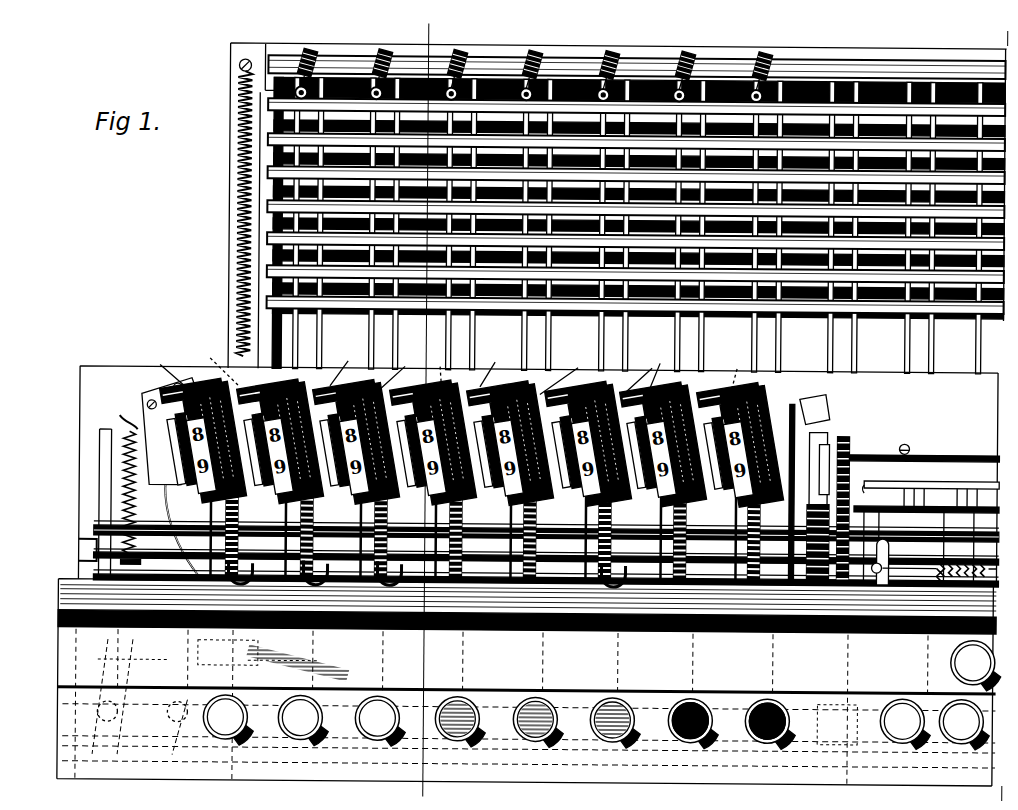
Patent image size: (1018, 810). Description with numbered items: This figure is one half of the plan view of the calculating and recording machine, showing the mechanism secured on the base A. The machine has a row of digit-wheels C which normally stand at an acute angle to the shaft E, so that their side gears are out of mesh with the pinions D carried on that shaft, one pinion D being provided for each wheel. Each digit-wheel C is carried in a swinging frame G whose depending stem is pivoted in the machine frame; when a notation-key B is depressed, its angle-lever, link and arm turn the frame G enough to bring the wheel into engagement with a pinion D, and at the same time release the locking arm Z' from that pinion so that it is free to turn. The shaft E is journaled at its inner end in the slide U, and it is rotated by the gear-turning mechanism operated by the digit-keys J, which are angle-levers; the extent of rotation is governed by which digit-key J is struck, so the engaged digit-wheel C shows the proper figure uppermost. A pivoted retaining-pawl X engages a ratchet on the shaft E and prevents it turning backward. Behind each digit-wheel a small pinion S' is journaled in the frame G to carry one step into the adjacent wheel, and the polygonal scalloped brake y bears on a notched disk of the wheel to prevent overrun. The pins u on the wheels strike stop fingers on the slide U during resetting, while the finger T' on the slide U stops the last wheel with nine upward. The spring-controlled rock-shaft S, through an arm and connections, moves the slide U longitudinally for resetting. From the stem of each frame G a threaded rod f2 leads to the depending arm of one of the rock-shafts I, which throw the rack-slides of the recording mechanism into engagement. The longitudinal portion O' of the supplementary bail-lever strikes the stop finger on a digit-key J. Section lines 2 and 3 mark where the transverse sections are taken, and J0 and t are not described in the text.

The rock-shafts I is at (790, 350).
The threaded rod f2 is at (534, 54).
The section line 2 2 is at (422, 403).
The section line 3 3 is at (1004, 411).
The finger T' is at (133, 497).
The screw t is at (152, 467).
The slide U is at (66, 549).
The pins u is at (438, 513).
The rock-shaft S is at (480, 435).
The shaft E is at (546, 545).
The pinions D is at (473, 549).
The swinging frame G is at (492, 539).
The digit-wheels C is at (448, 442).
The small pinion S' is at (401, 368).
The longitudinal portion of bail-lever O' is at (472, 369).
The polygonal scalloped brake y is at (462, 434).
The base A is at (873, 484).
The retaining-pawl X is at (931, 515).
The digit-keys J is at (939, 625).
The locking arm Z' is at (528, 682).
The notation-keys B is at (446, 723).
The control keys J0 is at (879, 714).